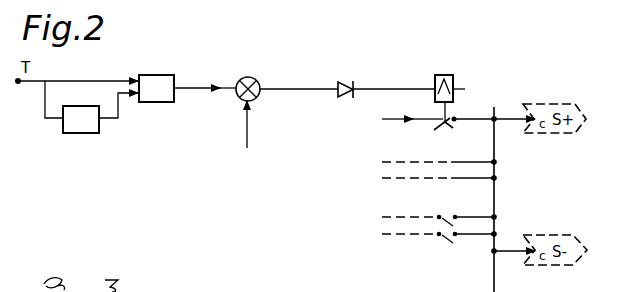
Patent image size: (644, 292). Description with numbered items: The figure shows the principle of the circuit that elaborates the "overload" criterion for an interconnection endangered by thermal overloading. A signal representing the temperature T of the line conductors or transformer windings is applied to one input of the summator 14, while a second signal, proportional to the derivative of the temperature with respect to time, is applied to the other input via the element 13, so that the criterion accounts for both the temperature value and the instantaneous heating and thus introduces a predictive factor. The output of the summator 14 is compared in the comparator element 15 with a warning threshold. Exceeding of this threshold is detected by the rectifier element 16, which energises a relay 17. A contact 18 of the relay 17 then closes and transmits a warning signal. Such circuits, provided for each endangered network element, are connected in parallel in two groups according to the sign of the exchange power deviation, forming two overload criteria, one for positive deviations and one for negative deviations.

The derivative element 13 is at (81, 119).
The summator 14 is at (153, 75).
The comparator element 15 is at (247, 77).
The rectifier element 16 is at (348, 81).
The relay 17 is at (440, 75).
The contact 18 is at (445, 125).